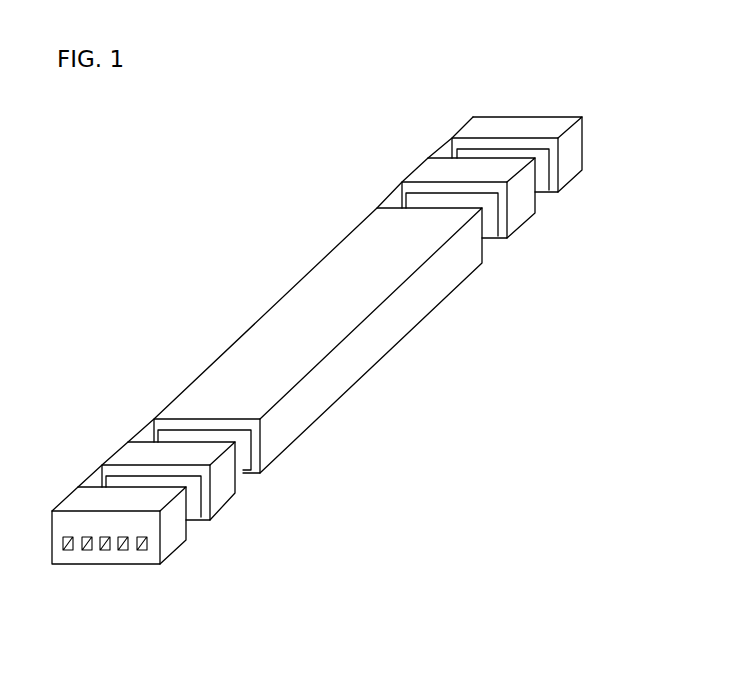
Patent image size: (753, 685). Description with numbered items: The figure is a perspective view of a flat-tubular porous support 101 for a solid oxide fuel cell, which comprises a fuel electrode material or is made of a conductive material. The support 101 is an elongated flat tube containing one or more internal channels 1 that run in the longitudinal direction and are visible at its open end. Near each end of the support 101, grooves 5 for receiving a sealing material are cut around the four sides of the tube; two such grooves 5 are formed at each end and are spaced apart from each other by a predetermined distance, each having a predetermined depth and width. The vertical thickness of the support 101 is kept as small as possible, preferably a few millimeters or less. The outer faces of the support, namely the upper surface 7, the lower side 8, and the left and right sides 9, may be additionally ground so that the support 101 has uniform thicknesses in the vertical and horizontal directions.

The internal channel 1 is at (104, 555).
The groove 5 is at (119, 470).
The upper surface 7 is at (318, 332).
The lower side 8 is at (299, 351).
The left and right sides 9 is at (376, 343).
The flat-tubular porous support 101 is at (317, 365).